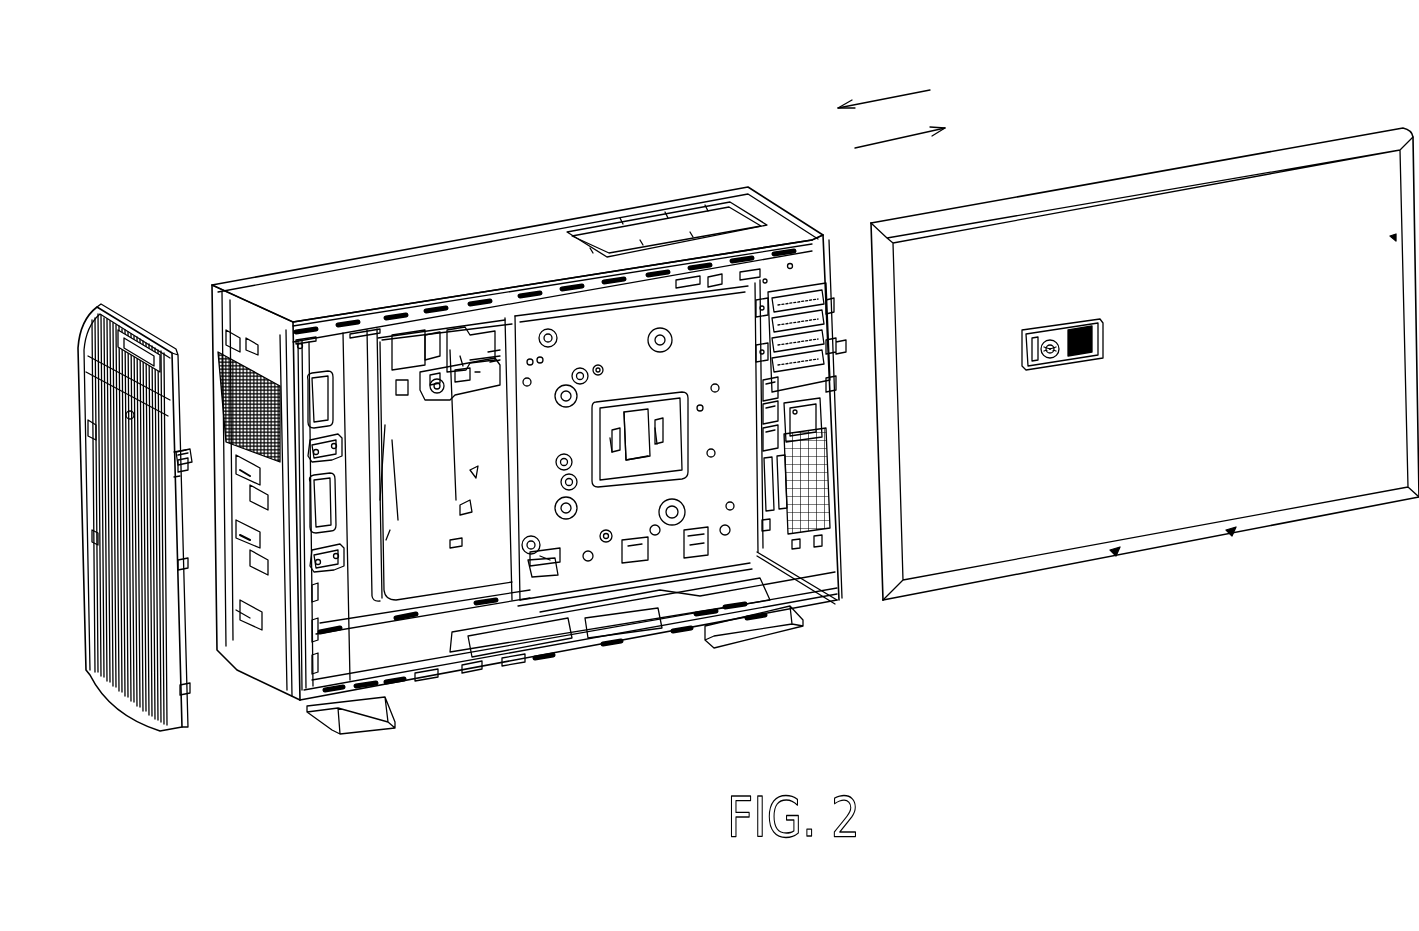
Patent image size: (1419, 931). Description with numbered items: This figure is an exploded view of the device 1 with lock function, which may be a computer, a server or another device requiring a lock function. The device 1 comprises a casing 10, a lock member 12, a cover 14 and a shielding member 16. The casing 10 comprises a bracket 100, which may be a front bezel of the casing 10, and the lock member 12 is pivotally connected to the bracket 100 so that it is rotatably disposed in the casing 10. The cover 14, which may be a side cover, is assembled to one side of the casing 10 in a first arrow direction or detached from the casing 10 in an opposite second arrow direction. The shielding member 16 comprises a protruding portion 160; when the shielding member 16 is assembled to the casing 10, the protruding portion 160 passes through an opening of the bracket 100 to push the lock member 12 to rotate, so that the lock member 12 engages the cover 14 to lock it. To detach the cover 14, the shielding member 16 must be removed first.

The device 1 is at (640, 100).
The casing 10 is at (480, 228).
The lock member 12 is at (335, 430).
The cover 14 is at (1160, 172).
The shielding member 16 is at (82, 335).
The bracket 100 is at (325, 466).
The protruding portion 160 is at (182, 456).